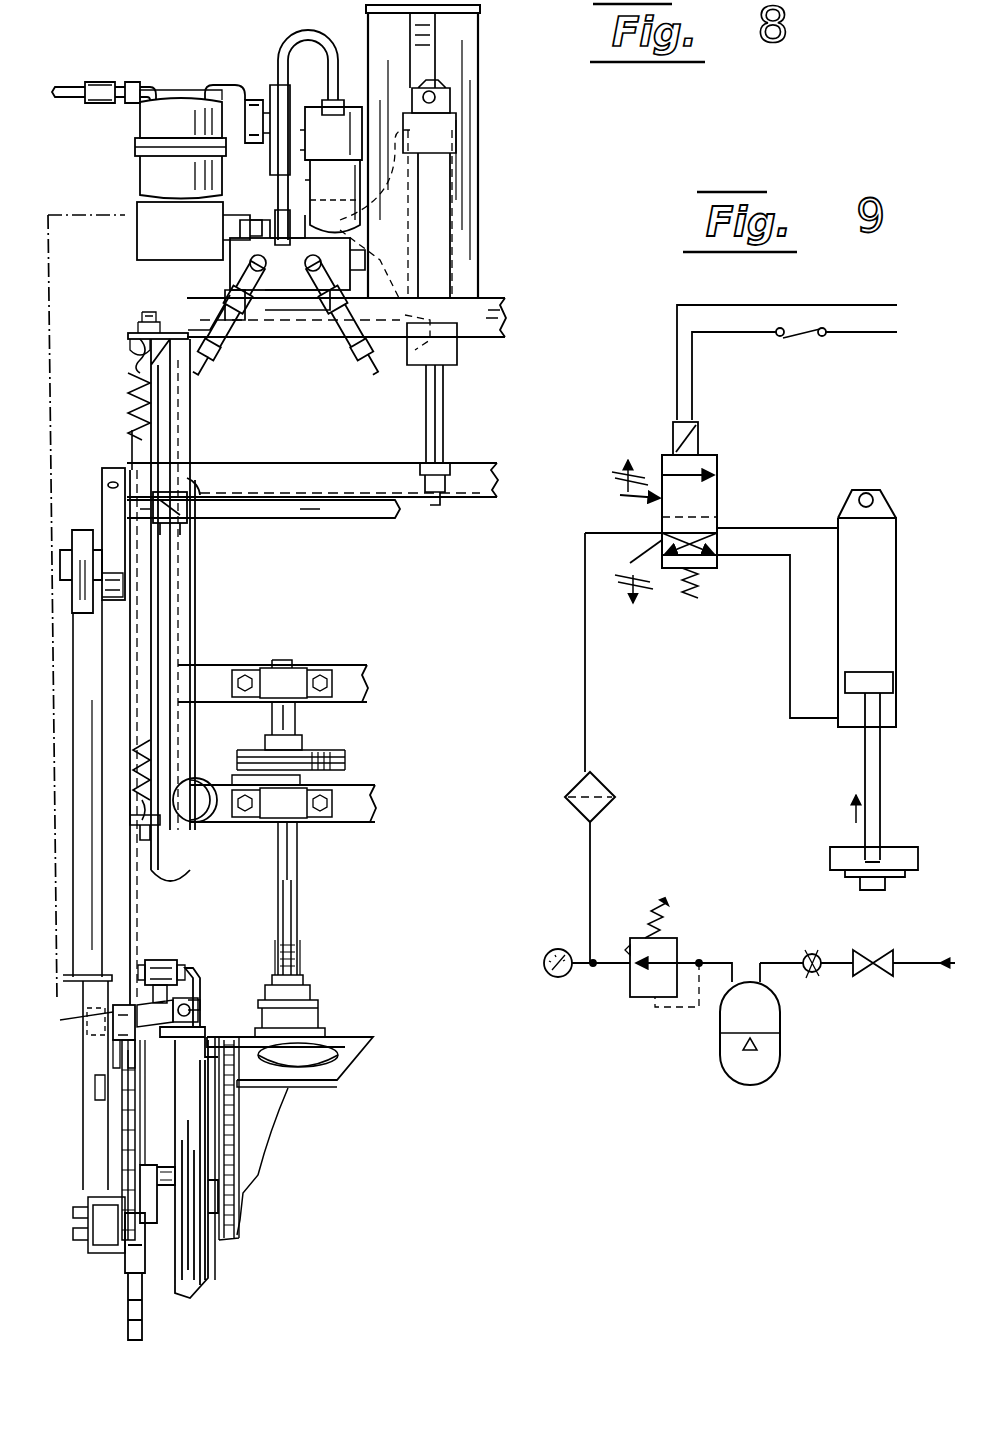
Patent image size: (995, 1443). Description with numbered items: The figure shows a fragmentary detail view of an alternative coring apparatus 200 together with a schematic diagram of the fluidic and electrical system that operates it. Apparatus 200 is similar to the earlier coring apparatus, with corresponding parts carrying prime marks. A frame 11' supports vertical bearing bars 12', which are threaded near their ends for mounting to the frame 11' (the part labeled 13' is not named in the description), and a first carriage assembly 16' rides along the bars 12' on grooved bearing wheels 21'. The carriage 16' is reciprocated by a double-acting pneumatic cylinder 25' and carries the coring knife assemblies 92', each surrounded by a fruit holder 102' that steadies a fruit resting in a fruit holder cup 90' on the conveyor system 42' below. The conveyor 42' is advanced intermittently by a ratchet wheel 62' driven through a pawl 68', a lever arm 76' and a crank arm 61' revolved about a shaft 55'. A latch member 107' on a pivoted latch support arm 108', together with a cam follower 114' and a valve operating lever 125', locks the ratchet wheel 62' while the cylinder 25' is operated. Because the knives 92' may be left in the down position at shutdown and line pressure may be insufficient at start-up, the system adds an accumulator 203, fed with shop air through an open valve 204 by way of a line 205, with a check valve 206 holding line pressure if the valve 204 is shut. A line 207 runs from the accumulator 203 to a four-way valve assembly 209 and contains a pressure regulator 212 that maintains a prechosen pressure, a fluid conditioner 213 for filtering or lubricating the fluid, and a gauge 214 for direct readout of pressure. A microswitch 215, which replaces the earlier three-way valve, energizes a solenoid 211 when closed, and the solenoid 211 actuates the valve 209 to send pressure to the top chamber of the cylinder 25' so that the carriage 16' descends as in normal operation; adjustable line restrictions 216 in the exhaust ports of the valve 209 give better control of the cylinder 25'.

In FIG. 8, the coring apparatus 200 is at (483, 100).
In FIG. 8, the pneumatic cylinder assembly 25' is at (463, 292).
In FIG. 8, the frame 11' is at (365, 297).
In FIG. 8, the first carriage assembly 16' is at (329, 455).
In FIG. 8, the shaft 55' is at (263, 526).
In FIG. 8, the bearing wheels 21' is at (204, 481).
In FIG. 8, the accumulator 203 is at (170, 108).
In FIG. 9, the accumulator 203 is at (778, 1025).
In FIG. 8, the check valve 206 is at (100, 88).
In FIG. 9, the check valve 206 is at (818, 953).
In FIG. 8, the gauge 214 is at (250, 100).
In FIG. 9, the gauge 214 is at (548, 957).
In FIG. 8, the fluid conditioner 213 is at (340, 145).
In FIG. 9, the fluid conditioner 213 is at (612, 797).
In FIG. 8, the solenoid 211 is at (322, 205).
In FIG. 9, the solenoid 211 is at (703, 438).
In FIG. 8, the four-way valve assembly 209 is at (228, 272).
In FIG. 9, the four-way valve assembly 209 is at (718, 492).
In FIG. 8, the line restrictions 216 is at (224, 345).
In FIG. 9, the line restrictions 216 is at (610, 470).
In FIG. 8, the mounting bracket 13' is at (148, 692).
In FIG. 8, the bearing bars 12' is at (188, 672).
In FIG. 8, the crank arm 61' is at (96, 519).
In FIG. 8, the lever arm 76' is at (70, 860).
In FIG. 8, the coring knife assemblies 92' is at (315, 898).
In FIG. 8, the fruit holders 102' is at (312, 988).
In FIG. 8, the fruit holder cups 90' is at (312, 1026).
In FIG. 8, the conveyor system 42' is at (310, 1141).
In FIG. 8, the microswitch 215 is at (195, 963).
In FIG. 9, the microswitch 215 is at (795, 338).
In FIG. 8, the latch support arm 108' is at (159, 975).
In FIG. 8, the valve operating lever 125' is at (223, 991).
In FIG. 8, the latch member 107' is at (87, 1028).
In FIG. 8, the cam follower 114' is at (70, 1032).
In FIG. 8, the ratchet wheel 62' is at (135, 1140).
In FIG. 8, the pawl 68' is at (145, 1252).
In FIG. 9, the line 207 is at (598, 903).
In FIG. 9, the pressure regulator 212 is at (680, 938).
In FIG. 9, the line 205 is at (765, 963).
In FIG. 9, the valve 204 is at (892, 953).